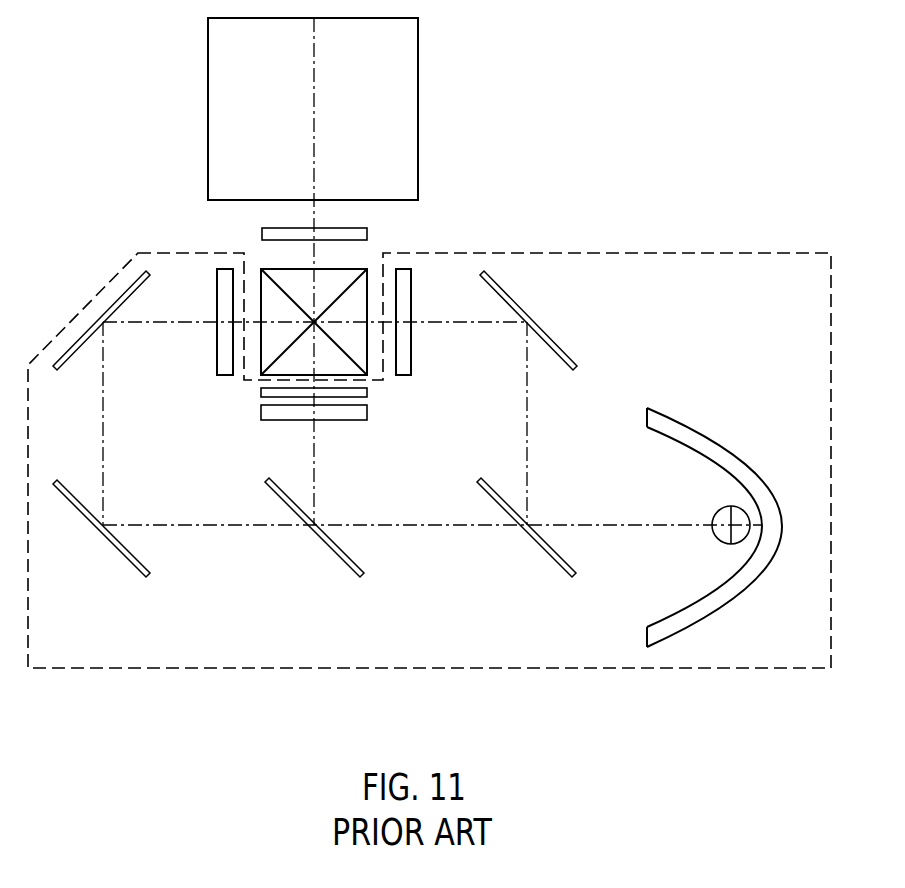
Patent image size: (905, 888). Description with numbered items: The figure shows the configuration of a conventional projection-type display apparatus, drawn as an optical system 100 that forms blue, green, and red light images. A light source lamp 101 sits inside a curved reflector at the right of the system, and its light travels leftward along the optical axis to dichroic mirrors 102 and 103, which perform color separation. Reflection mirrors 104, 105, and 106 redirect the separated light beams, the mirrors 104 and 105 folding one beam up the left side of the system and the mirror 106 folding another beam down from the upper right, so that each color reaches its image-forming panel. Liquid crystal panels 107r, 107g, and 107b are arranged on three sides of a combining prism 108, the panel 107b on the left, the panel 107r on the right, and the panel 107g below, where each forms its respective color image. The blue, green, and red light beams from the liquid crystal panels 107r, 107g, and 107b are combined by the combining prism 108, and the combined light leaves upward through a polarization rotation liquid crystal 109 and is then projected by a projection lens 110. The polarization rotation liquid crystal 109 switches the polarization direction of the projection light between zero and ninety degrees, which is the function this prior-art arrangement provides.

The optical system 100 is at (675, 251).
The light source lamp 101 is at (716, 510).
The dichroic mirror 102 is at (545, 553).
The dichroic mirror 103 is at (333, 553).
The reflection mirror 104 is at (120, 553).
The reflection mirror 105 is at (75, 360).
The reflection mirror 106 is at (559, 344).
The liquid crystal panel 107b is at (217, 358).
The liquid crystal panel 107r is at (412, 352).
The liquid crystal panel 107g is at (350, 421).
The combining prism 108 is at (263, 267).
The polarization rotation liquid crystal 109 is at (367, 234).
The projection lens 110 is at (418, 105).